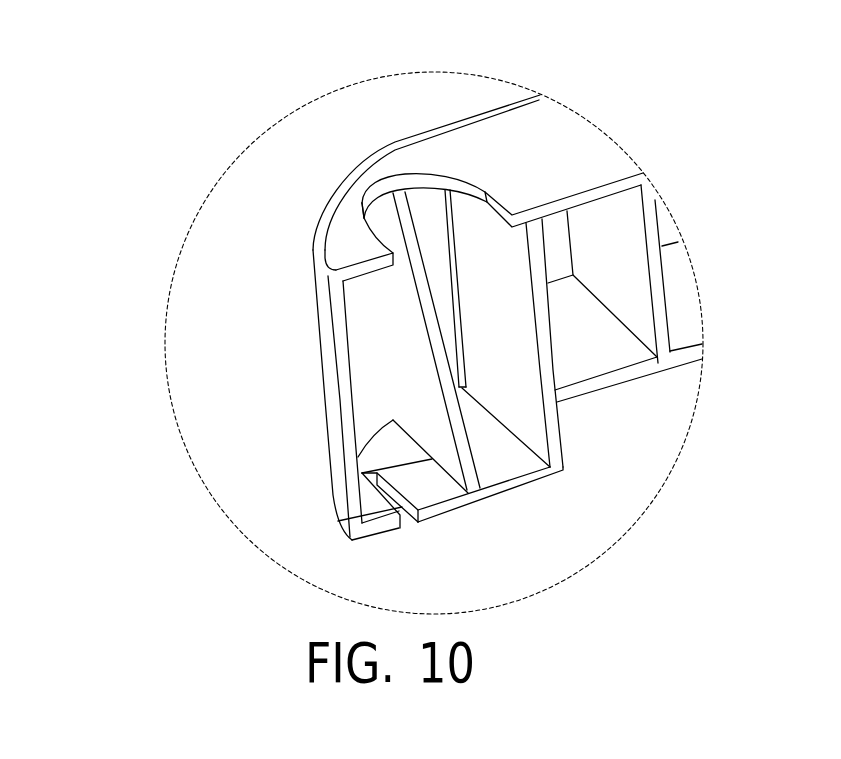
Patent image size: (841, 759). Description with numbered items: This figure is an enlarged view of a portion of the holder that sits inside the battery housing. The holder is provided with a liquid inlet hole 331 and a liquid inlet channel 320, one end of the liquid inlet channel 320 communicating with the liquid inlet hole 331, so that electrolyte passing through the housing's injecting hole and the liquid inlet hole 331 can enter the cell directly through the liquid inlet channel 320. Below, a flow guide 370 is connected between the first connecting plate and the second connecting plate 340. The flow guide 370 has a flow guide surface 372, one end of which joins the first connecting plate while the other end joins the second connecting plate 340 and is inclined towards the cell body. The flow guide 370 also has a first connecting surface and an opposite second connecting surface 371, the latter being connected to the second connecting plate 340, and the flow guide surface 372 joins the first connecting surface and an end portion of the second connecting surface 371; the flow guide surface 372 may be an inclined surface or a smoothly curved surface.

The liquid inlet channel 320 is at (436, 216).
The liquid inlet hole 331 is at (362, 203).
The flow guide surface 372 is at (432, 338).
The flow guide 370 is at (410, 403).
The second connecting surface 371 is at (377, 473).
The second connecting plate 340 is at (352, 540).